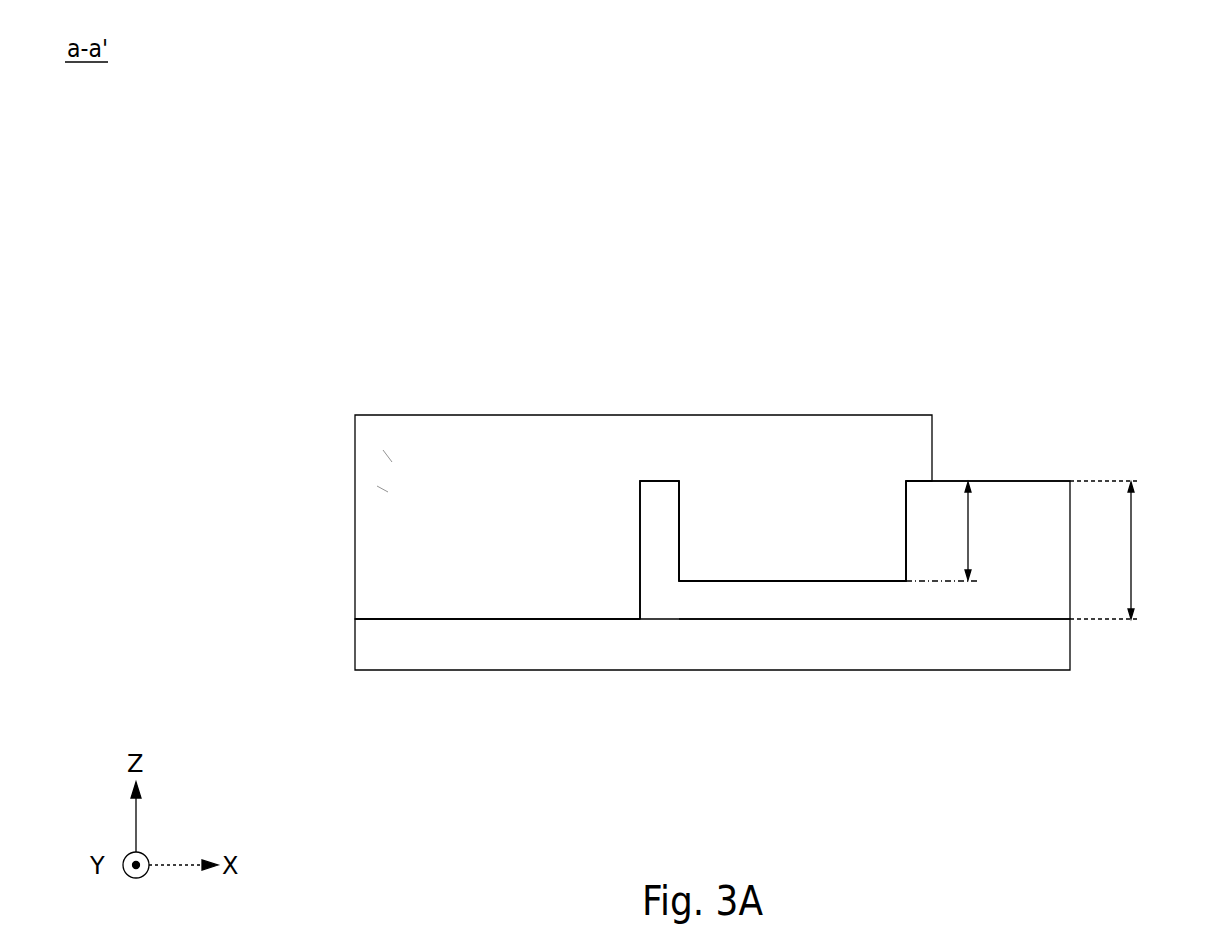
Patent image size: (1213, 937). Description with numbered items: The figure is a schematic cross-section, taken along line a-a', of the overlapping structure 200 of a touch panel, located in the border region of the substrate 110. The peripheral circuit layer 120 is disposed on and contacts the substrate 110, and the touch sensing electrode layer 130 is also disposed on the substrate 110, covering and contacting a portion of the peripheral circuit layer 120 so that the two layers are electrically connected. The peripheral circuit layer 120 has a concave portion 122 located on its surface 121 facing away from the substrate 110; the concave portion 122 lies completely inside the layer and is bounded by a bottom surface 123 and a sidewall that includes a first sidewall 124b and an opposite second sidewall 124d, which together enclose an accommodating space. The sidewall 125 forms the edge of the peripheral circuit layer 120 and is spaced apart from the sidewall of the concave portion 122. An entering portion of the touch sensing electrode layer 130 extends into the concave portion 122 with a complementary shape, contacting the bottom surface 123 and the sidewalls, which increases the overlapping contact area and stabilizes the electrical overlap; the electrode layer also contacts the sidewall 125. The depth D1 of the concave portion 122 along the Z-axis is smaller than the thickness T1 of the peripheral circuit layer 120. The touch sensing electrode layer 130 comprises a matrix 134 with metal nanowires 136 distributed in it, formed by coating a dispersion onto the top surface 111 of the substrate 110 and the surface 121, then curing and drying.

The overlapping structure 200 is at (108, 100).
The substrate 110 is at (1062, 647).
The top surface of the substrate 111 is at (848, 620).
The peripheral circuit layer 120 is at (1061, 487).
The surface of the peripheral circuit layer 121 is at (1033, 483).
The concave portion 122 is at (724, 548).
The bottom surface 123 is at (780, 581).
The first sidewall 124b is at (679, 540).
The second sidewall 124d is at (907, 533).
The sidewall of the peripheral circuit layer 125 is at (639, 599).
The touch sensing electrode layer 130 is at (288, 447).
The matrix 134 is at (383, 450).
The metal nanowires 136 is at (377, 486).
The depth of the concave portion D1 is at (962, 531).
The thickness of the peripheral circuit layer T1 is at (1122, 550).